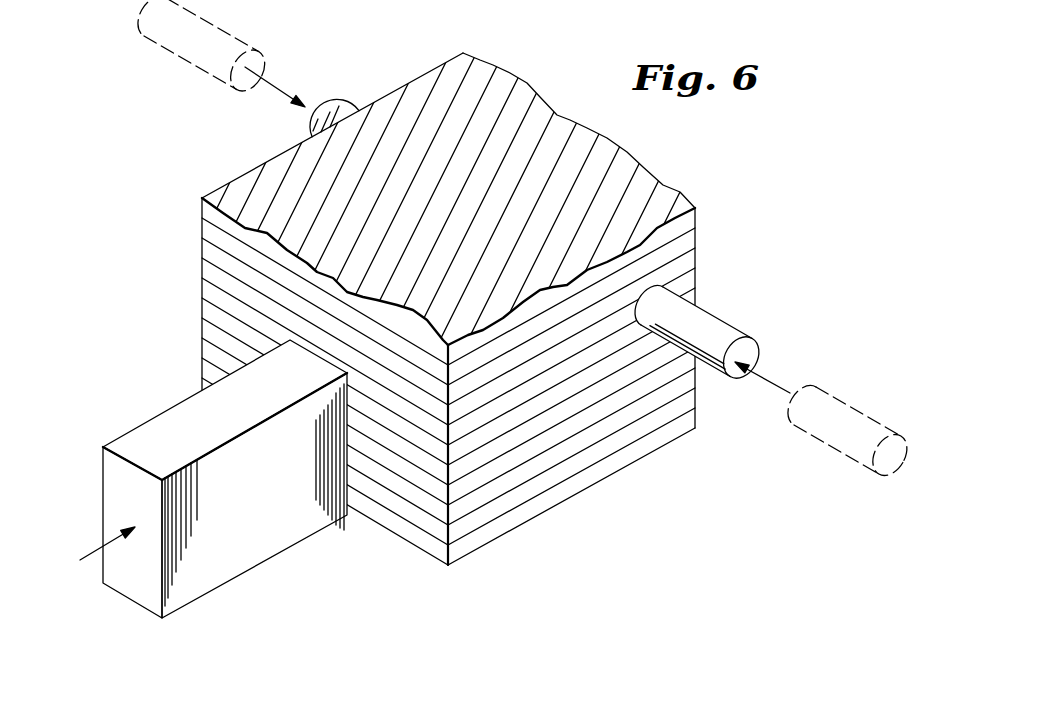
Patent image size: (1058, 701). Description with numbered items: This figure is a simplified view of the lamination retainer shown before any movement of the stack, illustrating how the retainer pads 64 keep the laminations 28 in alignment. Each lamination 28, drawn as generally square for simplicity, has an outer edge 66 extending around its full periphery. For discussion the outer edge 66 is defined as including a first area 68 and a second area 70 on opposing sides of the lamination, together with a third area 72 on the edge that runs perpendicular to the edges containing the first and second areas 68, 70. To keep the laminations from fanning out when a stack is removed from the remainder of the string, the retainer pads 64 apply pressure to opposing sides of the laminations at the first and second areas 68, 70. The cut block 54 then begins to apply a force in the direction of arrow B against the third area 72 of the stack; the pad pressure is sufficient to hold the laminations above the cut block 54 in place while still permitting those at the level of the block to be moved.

The lamination 28 is at (479, 305).
The cut block 54 is at (223, 558).
The retainer pad 64 is at (338, 107).
The outer edge 66 is at (415, 537).
The first area 68 is at (643, 250).
The second area 70 is at (404, 81).
The third area 72 is at (283, 255).
The arrow B is at (98, 553).